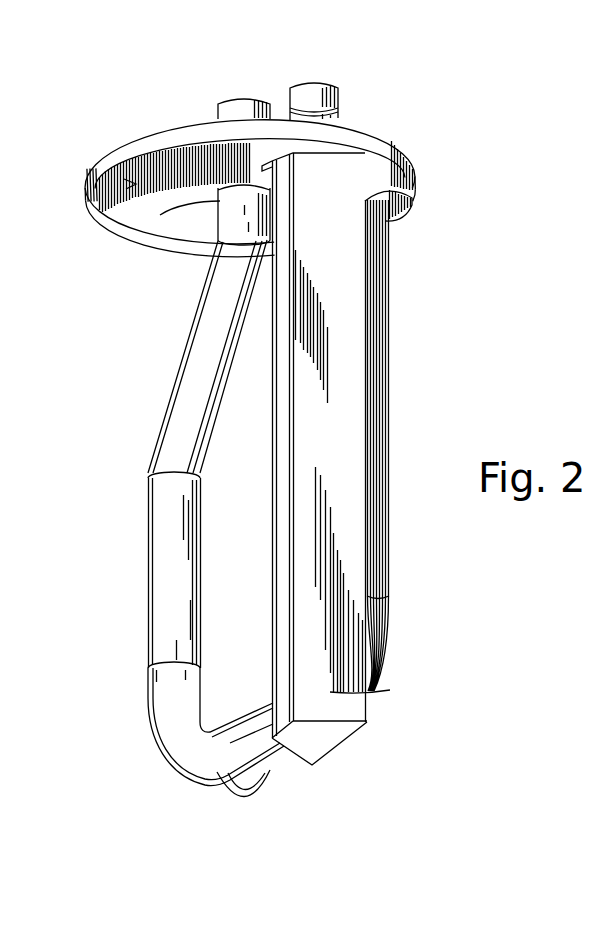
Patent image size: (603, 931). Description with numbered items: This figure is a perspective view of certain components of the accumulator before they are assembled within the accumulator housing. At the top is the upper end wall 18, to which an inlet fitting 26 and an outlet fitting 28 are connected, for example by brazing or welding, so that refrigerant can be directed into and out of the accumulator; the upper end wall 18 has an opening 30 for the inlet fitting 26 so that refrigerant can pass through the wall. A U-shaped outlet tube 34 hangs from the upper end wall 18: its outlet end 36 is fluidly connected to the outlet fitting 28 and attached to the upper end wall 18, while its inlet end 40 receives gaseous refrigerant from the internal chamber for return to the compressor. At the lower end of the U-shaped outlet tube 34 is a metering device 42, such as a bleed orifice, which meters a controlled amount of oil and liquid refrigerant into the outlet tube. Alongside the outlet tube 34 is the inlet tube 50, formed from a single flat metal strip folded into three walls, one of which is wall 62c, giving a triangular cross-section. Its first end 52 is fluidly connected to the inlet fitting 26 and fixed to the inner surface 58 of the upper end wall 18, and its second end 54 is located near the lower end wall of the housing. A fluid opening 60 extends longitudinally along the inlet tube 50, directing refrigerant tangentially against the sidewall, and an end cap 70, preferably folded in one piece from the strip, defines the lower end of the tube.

The upper end wall 18 is at (113, 147).
The inlet fitting 26 is at (340, 102).
The outlet fitting 28 is at (237, 100).
The opening 30 is at (285, 160).
The outlet tube 34 is at (200, 372).
The outlet end 36 is at (220, 238).
The inlet end 40 is at (412, 186).
The metering device 42 is at (227, 797).
The inlet tube 50 is at (353, 440).
The first end 52 is at (325, 160).
The second end 54 is at (330, 692).
The inner surface 58 is at (124, 182).
The fluid opening 60 is at (272, 483).
The wall 62c is at (350, 537).
The end cap 70 is at (315, 742).